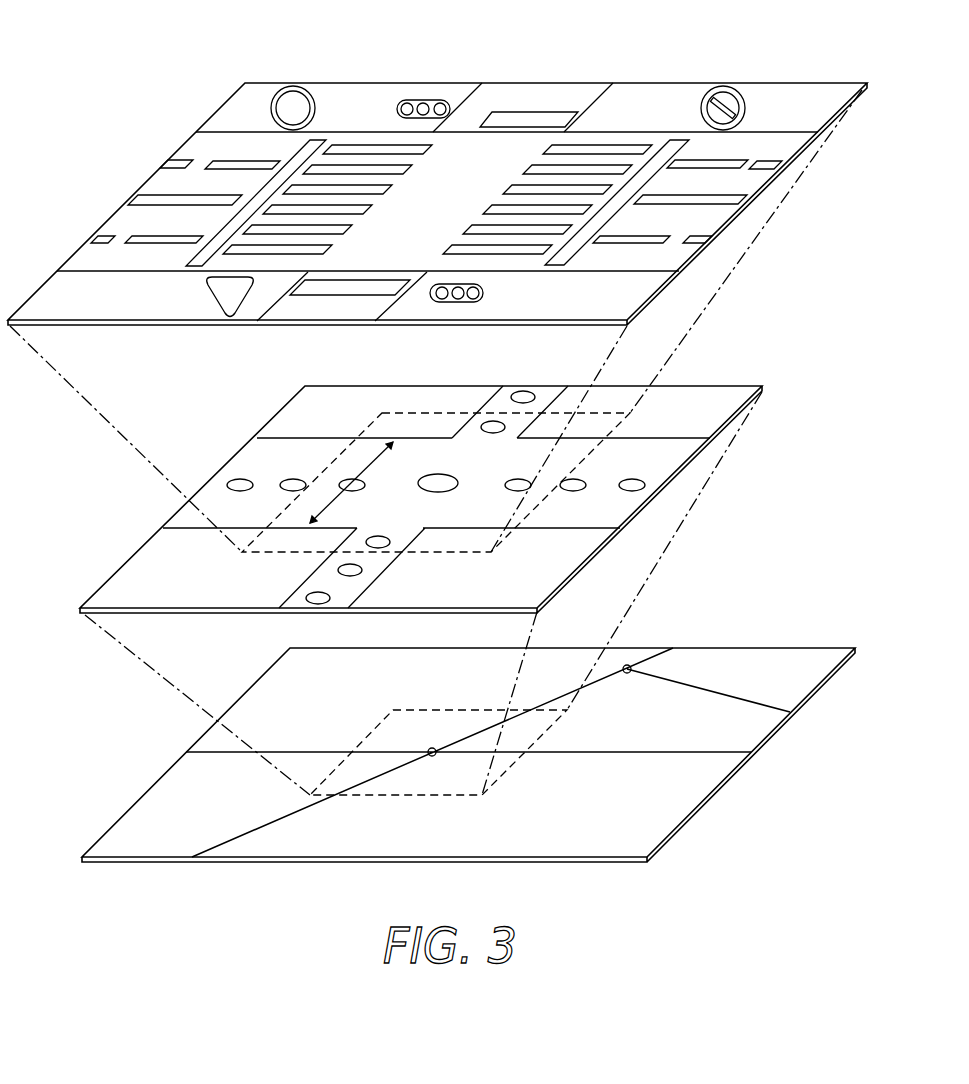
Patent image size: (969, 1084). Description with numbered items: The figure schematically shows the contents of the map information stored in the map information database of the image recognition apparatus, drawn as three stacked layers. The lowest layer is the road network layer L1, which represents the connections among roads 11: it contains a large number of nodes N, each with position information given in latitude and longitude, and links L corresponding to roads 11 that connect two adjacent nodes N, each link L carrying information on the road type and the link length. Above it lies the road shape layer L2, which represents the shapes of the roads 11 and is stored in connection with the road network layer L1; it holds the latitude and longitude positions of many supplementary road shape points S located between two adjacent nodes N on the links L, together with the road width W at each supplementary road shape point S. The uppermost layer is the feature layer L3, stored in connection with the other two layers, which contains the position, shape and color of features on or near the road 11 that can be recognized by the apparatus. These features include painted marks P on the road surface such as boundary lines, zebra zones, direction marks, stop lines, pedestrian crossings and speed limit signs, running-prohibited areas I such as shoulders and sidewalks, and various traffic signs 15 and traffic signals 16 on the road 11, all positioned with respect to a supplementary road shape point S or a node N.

The road network layer L1 is at (152, 782).
The road shape layer L2 is at (131, 560).
The feature layer L3 is at (72, 256).
The painted marks P is at (172, 202).
The running-prohibited areas I is at (370, 103).
The roads 11 is at (532, 110).
The traffic signs 15 is at (278, 92).
The traffic signals 16 is at (423, 103).
The supplementary road shape points S is at (347, 485).
The nodes N is at (457, 482).
The road width W is at (332, 504).
The links L is at (472, 732).